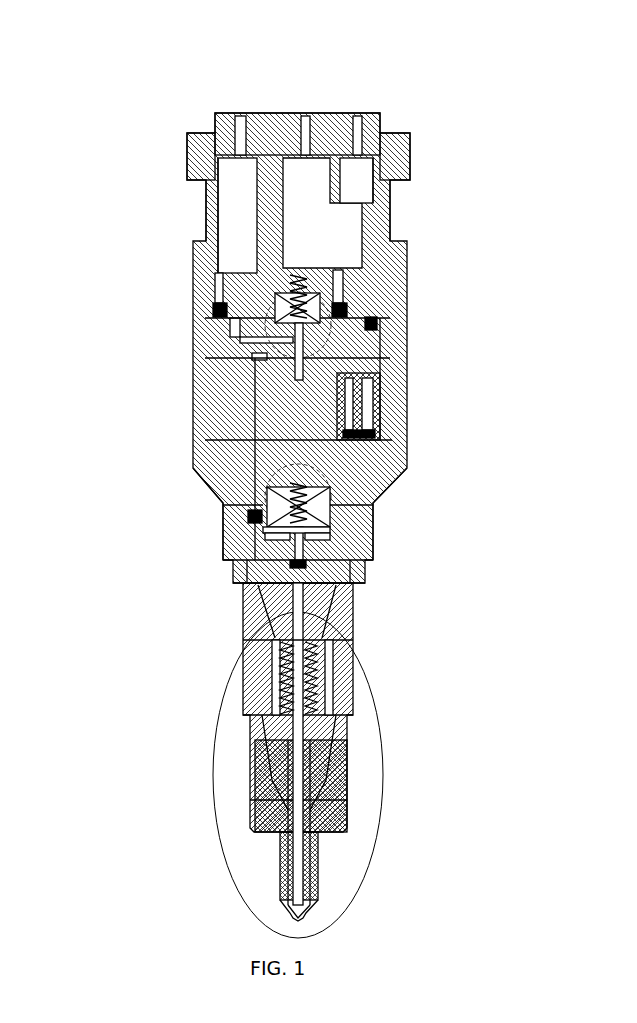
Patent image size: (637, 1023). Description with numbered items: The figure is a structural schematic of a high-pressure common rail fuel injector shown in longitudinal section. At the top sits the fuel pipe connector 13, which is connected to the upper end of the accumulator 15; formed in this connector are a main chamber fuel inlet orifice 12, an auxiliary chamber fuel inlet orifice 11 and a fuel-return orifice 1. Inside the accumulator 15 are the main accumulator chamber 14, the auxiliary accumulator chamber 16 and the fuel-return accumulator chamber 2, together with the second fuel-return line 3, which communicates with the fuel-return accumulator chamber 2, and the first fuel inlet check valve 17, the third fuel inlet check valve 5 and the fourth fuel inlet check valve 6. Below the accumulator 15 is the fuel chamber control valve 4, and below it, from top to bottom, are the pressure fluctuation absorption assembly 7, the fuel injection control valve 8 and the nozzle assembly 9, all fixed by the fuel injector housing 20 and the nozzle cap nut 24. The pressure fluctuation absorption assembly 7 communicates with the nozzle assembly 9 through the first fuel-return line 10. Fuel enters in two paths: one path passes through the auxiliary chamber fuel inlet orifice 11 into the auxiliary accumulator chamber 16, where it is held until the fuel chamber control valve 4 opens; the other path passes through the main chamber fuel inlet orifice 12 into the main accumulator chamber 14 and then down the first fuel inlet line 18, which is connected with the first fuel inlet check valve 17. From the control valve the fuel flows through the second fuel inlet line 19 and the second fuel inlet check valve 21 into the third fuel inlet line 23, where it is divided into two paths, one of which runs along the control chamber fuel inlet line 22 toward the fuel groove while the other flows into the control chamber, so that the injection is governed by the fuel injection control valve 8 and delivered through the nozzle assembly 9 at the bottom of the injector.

The fuel-return orifice 1 is at (350, 320).
The fuel-return accumulator chamber 2 is at (427, 154).
The second fuel-return line 3 is at (443, 199).
The fuel chamber control valve 4 is at (398, 213).
The third fuel inlet check valve 5 is at (423, 269).
The fourth fuel inlet check valve 6 is at (423, 304).
The pressure fluctuation absorption assembly 7 is at (425, 380).
The fuel injection control valve 8 is at (359, 409).
The nozzle assembly 9 is at (366, 545).
The first fuel-return line 10 is at (376, 650).
The auxiliary chamber fuel inlet orifice 11 is at (266, 87).
The main chamber fuel inlet orifice 12 is at (251, 100).
The fuel pipe connector 13 is at (235, 145).
The main accumulator chamber 14 is at (158, 212).
The accumulator 15 is at (142, 215).
The auxiliary accumulator chamber 16 is at (228, 303).
The first fuel inlet check valve 17 is at (180, 311).
The first fuel inlet line 18 is at (143, 317).
The second fuel inlet line 19 is at (218, 439).
The fuel injector housing 20 is at (233, 492).
The second fuel inlet check valve 21 is at (161, 499).
The control chamber fuel inlet line 22 is at (195, 551).
The third fuel inlet line 23 is at (195, 566).
The nozzle cap nut 24 is at (216, 760).